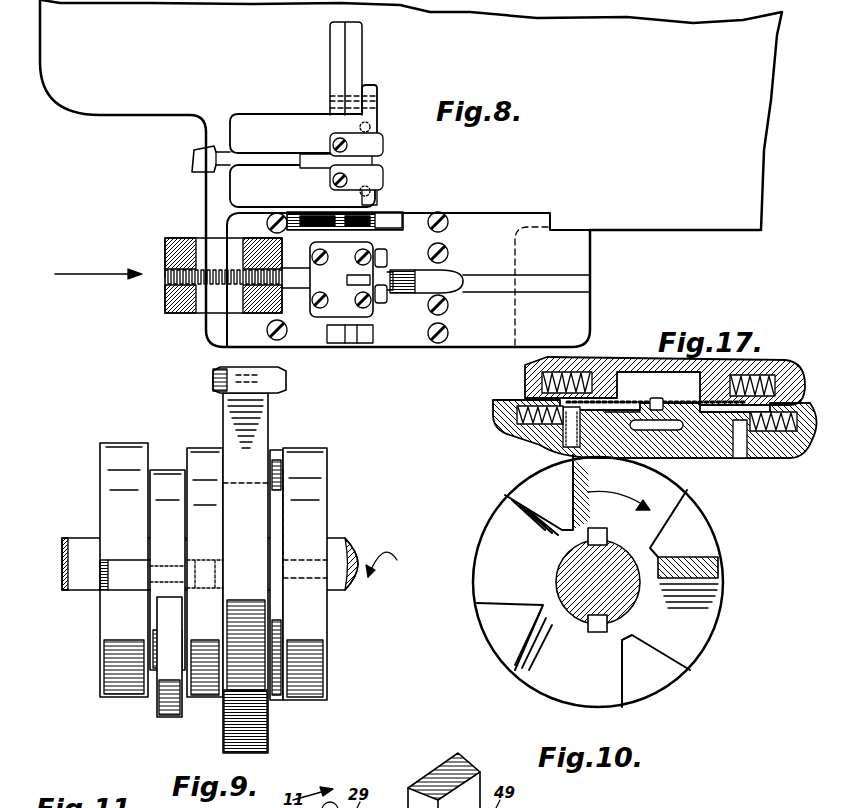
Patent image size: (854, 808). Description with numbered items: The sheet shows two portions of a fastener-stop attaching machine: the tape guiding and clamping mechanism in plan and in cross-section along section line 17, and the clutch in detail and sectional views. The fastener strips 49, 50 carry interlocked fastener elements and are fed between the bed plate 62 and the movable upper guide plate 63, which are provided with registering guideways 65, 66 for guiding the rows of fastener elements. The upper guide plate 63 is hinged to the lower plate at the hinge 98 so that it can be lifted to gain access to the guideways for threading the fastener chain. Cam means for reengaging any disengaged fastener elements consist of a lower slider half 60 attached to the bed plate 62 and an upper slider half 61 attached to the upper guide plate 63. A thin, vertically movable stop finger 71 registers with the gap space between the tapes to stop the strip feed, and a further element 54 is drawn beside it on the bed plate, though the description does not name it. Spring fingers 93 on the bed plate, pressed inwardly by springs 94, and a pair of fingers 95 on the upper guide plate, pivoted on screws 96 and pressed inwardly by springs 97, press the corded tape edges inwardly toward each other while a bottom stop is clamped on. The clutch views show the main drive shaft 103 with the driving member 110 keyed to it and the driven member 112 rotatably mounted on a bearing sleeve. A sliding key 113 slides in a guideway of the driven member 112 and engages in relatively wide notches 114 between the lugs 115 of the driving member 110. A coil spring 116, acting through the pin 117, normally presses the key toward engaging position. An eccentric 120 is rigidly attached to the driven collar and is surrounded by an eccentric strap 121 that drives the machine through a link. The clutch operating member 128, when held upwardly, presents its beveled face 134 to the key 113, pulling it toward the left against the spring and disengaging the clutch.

In FIG. 8, the section line 17— 17 is at (365, 57).
In FIG. 8, the fastener strip 49 is at (177, 250).
In FIG. 17, the fastener strip 49 is at (700, 374).
In FIG. 8, the fastener strip 50 is at (177, 300).
In FIG. 17, the fastener strip 50 is at (527, 383).
In FIG. 8, the plunger 54 is at (418, 290).
In FIG. 8, the lower slider half 60 is at (200, 250).
In FIG. 8, the upper slider half 61 is at (200, 157).
In FIG. 8, the bed plate 62 is at (575, 262).
In FIG. 17, the bed plate 62 is at (690, 445).
In FIG. 8, the upper guide plate 63 is at (297, 130).
In FIG. 17, the upper guide plate 63 is at (628, 368).
In FIG. 8, the guideway 65 is at (580, 290).
In FIG. 8, the guideway 66 is at (263, 160).
In FIG. 8, the stop finger 71 is at (356, 276).
In FIG. 8, the spring fingers 93 is at (386, 270).
In FIG. 17, the spring fingers 93 is at (657, 440).
In FIG. 8, the springs 94 is at (383, 232).
In FIG. 17, the springs 94 is at (510, 410).
In FIG. 8, the fingers 95 is at (378, 174).
In FIG. 17, the fingers 95 is at (665, 369).
In FIG. 8, the screws 96 is at (333, 146).
In FIG. 8, the springs 97 is at (371, 128).
In FIG. 17, the springs 97 is at (547, 358).
In FIG. 8, the hinge 98 is at (380, 219).
In FIG. 9, the main drive shaft 103 is at (63, 566).
In FIG. 10, the main drive shaft 103 is at (568, 573).
In FIG. 9, the driving member 110 is at (312, 652).
In FIG. 10, the driving member 110 is at (505, 498).
In FIG. 9, the driven member 112 is at (110, 627).
In FIG. 9, the sliding key 113 is at (125, 568).
In FIG. 10, the sliding key 113 is at (722, 563).
In FIG. 9, the notches 114 is at (284, 624).
In FIG. 10, the notches 114 is at (497, 541).
In FIG. 9, the lugs 115 is at (273, 648).
In FIG. 10, the lugs 115 is at (503, 625).
In FIG. 9, the coil spring 116 is at (222, 572).
In FIG. 9, the pin 117 is at (102, 562).
In FIG. 9, the eccentric 120 is at (240, 694).
In FIG. 9, the eccentric strap 121 is at (236, 452).
In FIG. 9, the clutch operating member 128 is at (166, 705).
In FIG. 9, the beveled face 134 is at (172, 578).